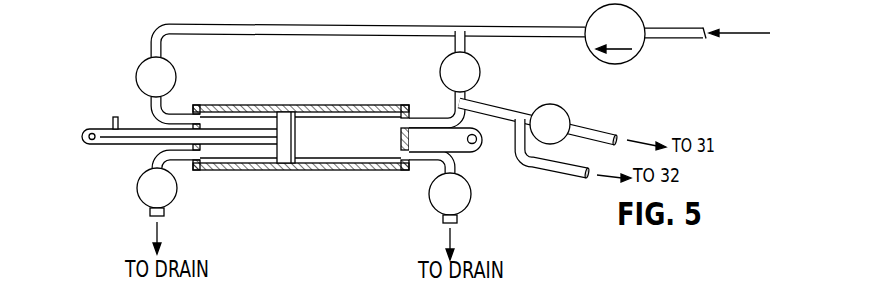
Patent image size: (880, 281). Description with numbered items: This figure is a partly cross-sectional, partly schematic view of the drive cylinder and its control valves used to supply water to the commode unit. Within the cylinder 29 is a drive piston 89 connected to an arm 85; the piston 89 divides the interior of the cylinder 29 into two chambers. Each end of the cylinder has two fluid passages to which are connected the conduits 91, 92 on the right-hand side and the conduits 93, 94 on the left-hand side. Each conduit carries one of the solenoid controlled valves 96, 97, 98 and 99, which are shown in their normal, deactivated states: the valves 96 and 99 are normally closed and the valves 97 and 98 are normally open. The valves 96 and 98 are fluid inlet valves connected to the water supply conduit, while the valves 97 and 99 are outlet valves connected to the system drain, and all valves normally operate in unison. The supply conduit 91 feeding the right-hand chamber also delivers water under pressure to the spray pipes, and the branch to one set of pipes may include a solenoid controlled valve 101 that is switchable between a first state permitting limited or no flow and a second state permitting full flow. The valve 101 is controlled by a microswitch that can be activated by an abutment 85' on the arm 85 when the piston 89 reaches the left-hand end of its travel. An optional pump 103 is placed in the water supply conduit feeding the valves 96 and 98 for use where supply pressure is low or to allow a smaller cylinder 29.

The cylinder 29 is at (328, 105).
The arm 85 is at (179, 153).
The abutment 85' is at (102, 108).
The drive piston 89 is at (282, 112).
The supply conduit 91 is at (428, 119).
The conduit 92 is at (428, 151).
The conduit 93 is at (174, 117).
The conduit 94 is at (179, 153).
The solenoid controlled valve 96 is at (481, 71).
The solenoid controlled valve 97 is at (471, 190).
The solenoid controlled valve 98 is at (143, 68).
The solenoid controlled valve 99 is at (138, 190).
The solenoid controlled valve 101 is at (562, 110).
The pump 103 is at (628, 58).